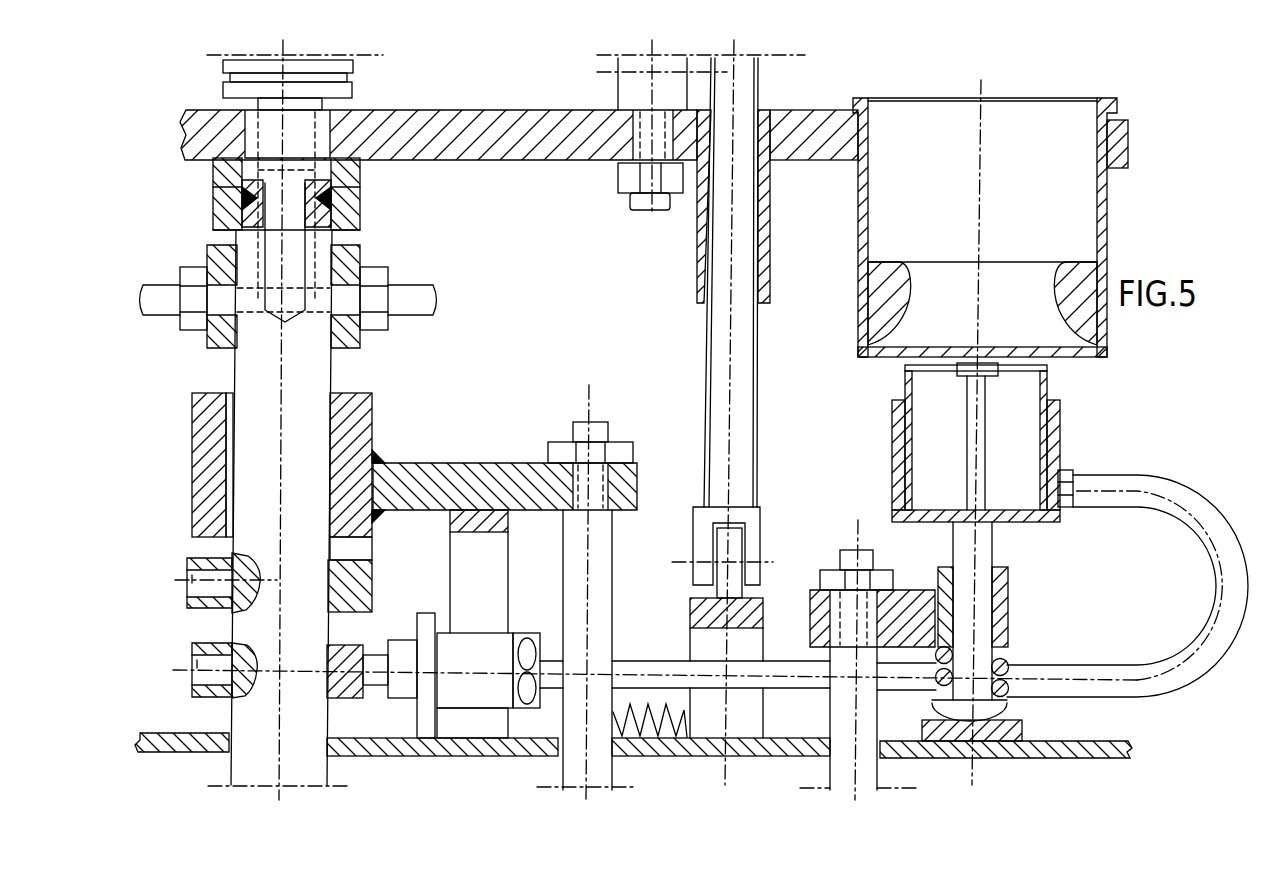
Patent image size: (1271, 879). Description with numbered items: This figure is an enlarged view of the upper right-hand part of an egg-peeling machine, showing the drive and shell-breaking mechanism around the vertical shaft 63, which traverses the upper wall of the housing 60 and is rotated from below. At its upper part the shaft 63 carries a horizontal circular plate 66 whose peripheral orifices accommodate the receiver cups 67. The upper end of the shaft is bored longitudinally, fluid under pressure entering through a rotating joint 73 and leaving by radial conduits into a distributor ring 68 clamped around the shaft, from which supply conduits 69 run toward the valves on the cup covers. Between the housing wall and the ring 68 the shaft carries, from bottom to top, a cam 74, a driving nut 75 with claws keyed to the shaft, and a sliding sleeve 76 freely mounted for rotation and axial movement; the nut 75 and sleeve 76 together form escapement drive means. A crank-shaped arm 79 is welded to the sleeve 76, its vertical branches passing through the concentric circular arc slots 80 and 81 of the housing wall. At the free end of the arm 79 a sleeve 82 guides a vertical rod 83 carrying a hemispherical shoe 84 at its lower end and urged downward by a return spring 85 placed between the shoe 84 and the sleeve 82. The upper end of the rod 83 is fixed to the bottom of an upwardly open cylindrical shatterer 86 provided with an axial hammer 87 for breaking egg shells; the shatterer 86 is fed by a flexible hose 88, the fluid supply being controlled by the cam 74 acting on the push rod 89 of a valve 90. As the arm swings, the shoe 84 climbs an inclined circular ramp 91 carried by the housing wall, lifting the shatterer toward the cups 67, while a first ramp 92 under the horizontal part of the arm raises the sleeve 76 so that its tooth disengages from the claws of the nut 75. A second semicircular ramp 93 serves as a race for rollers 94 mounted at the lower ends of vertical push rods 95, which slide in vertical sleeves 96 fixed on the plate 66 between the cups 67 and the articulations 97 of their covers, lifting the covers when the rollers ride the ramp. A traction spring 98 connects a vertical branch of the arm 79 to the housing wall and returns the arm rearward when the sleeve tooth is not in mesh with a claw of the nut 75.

The housing 60 is at (1090, 750).
The shaft 63 is at (263, 377).
The horizontal circular plate 66 is at (1129, 141).
The receiver cups 67 is at (1107, 232).
The distributor ring 68 is at (207, 256).
The supply conduits 69 is at (166, 300).
The rotating joint 73 is at (330, 62).
The cam 74 is at (200, 690).
The driving nut 75 is at (203, 603).
The sliding sleeve 76 is at (207, 462).
The arm 79 is at (418, 480).
The circular arc slot 80 is at (558, 753).
The circular arc slot 81 is at (828, 755).
The sleeve 82 is at (1008, 600).
The vertical rod 83 is at (985, 553).
The hemispherical shoe 84 is at (1008, 712).
The return spring 85 is at (1006, 668).
The cylindrical shatterer 86 is at (1053, 424).
The axial hammer 87 is at (970, 368).
The flexible hose 88 is at (1222, 627).
The push rod 89 is at (378, 686).
The valve 90 is at (495, 669).
The inclined ramp 91 is at (968, 742).
The first ramp 92 is at (485, 515).
The second ramp 93 is at (690, 612).
The rollers 94 is at (730, 545).
The vertical push rods 95 is at (718, 330).
The vertical sleeves 96 is at (700, 247).
The articulations 97 is at (652, 70).
The traction spring 98 is at (633, 742).